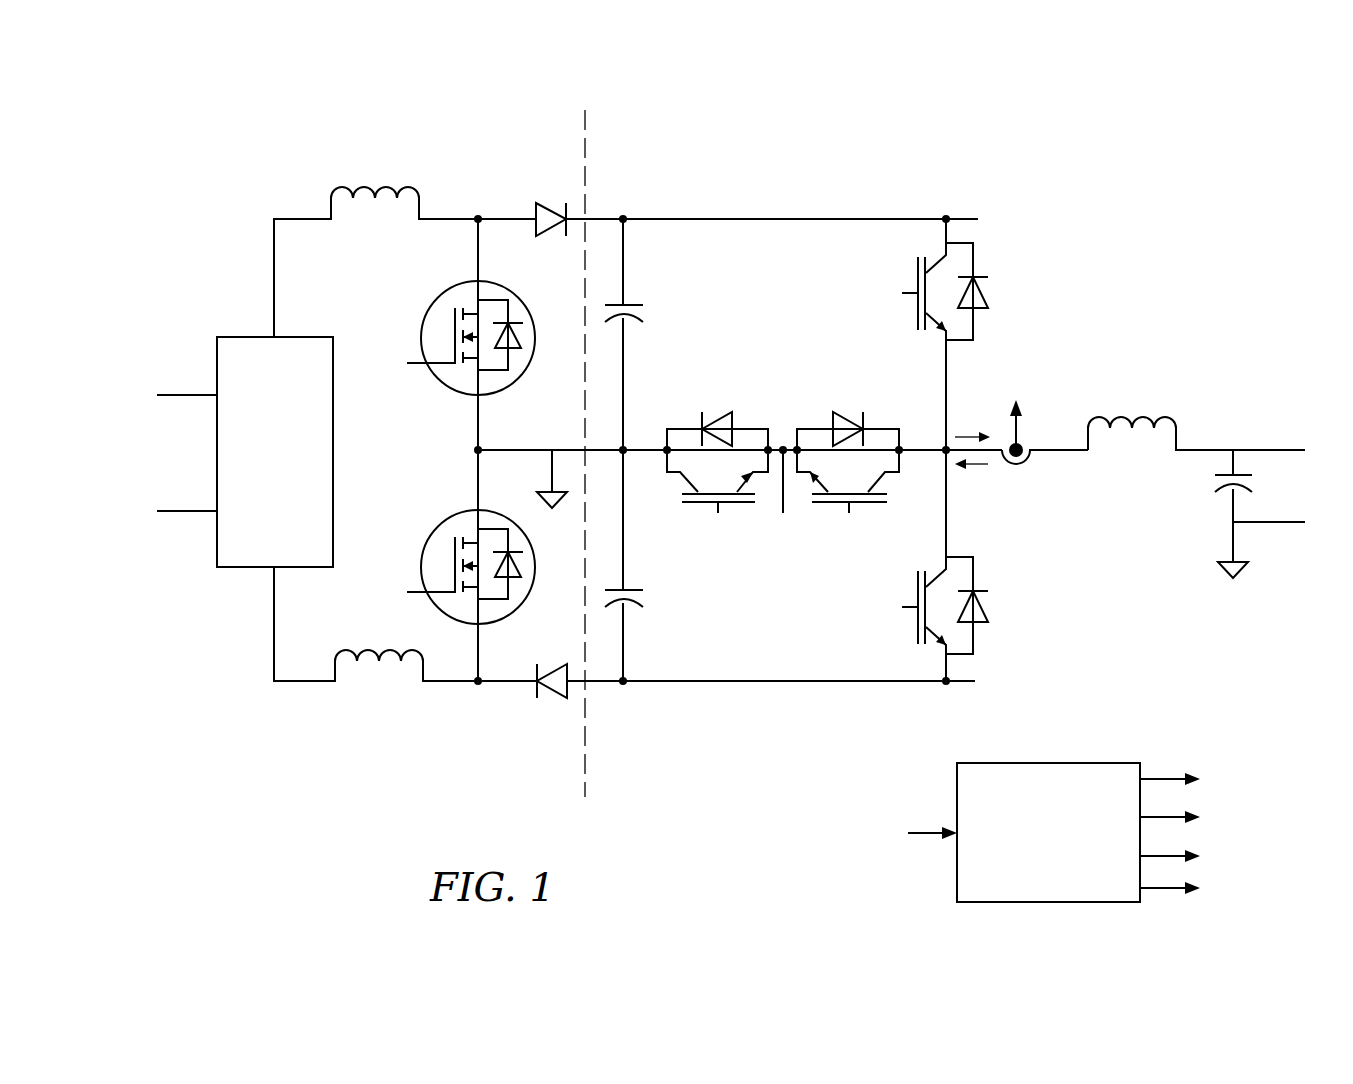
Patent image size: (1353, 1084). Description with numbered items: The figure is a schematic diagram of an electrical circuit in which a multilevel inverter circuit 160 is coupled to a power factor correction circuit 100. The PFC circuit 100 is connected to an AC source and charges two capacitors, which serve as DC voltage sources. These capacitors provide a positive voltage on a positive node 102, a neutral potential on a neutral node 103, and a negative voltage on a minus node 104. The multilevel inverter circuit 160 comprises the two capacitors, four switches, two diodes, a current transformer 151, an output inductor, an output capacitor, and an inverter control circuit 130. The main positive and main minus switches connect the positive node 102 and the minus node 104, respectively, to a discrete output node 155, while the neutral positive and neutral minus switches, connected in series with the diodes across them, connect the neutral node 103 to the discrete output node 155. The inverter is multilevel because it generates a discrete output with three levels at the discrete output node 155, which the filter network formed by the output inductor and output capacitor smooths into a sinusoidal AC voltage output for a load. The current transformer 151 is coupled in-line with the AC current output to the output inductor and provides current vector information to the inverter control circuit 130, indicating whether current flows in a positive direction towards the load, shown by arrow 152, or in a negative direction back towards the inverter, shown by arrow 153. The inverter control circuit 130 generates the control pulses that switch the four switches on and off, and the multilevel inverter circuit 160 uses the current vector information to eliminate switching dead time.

The power factor correction circuit 100 is at (224, 158).
The positive node 102 is at (623, 219).
The neutral node 103 is at (623, 450).
The minus node 104 is at (623, 681).
The inverter control circuit 130 is at (1072, 763).
The current transformer 151 is at (1028, 459).
The arrow indicating positive current direction 152 is at (963, 437).
The arrow indicating negative current direction 153 is at (971, 467).
The discrete output node 155 is at (943, 452).
The multilevel inverter circuit 160 is at (858, 169).